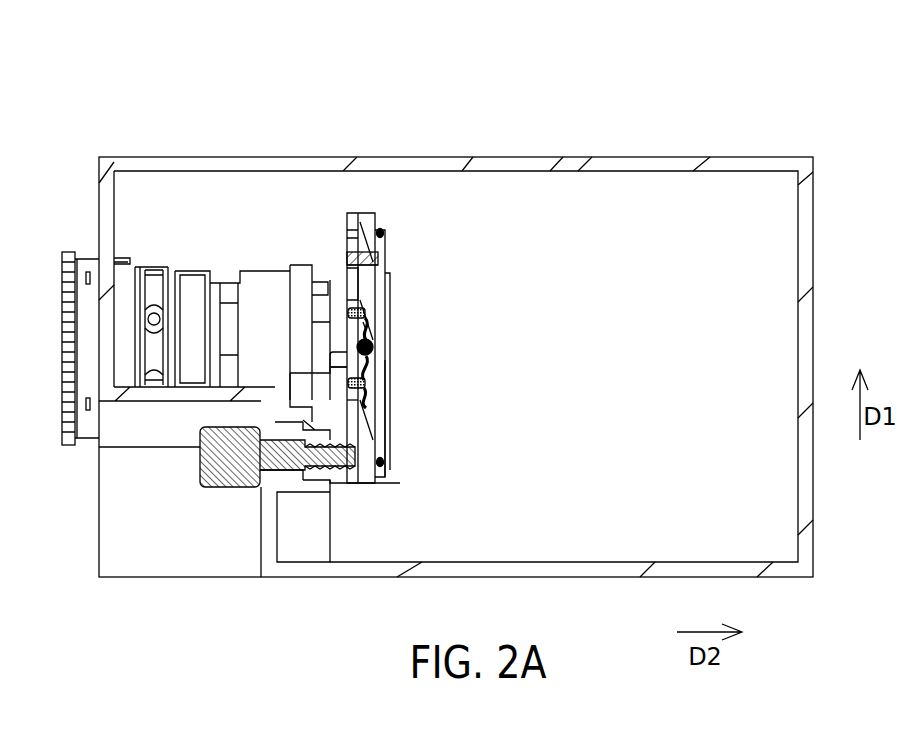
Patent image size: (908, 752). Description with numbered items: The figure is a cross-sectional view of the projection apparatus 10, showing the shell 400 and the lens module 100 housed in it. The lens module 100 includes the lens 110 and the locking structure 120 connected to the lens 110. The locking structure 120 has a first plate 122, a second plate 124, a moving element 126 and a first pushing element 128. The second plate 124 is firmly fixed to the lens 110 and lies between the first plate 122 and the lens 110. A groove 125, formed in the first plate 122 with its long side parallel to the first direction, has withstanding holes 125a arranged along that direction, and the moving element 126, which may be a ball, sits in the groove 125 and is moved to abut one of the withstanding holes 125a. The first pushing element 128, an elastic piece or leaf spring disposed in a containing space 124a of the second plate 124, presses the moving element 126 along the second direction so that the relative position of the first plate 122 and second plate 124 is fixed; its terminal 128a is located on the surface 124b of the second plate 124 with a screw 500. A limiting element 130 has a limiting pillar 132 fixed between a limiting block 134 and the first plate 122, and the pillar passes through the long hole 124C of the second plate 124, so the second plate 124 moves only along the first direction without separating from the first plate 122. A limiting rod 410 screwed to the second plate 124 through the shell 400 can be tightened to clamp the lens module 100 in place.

The projection apparatus 10 is at (17, 96).
The lens module 100 is at (327, 52).
The lens 110 is at (163, 215).
The locking structure 120 is at (356, 80).
The first plate 122 is at (380, 213).
The second plate 124 is at (352, 302).
The long hole 124C is at (360, 266).
The containing space 124a is at (345, 360).
The surface 124b is at (364, 400).
The groove 125 is at (385, 372).
The withstanding holes 125a is at (375, 348).
The moving element 126 is at (373, 348).
The first pushing element 128 is at (370, 333).
The terminal 128a is at (363, 322).
The limiting element 130 is at (272, 110).
The limiting pillar 132 is at (347, 253).
The limiting block 134 is at (347, 262).
The shell 400 is at (626, 564).
The limiting rod 410 is at (217, 482).
The screw 500 is at (357, 313).